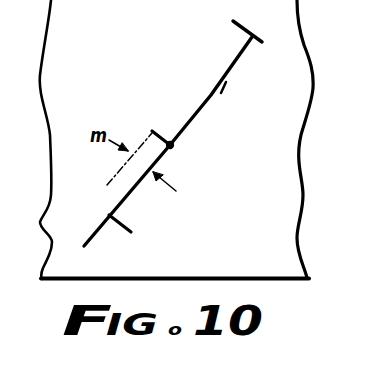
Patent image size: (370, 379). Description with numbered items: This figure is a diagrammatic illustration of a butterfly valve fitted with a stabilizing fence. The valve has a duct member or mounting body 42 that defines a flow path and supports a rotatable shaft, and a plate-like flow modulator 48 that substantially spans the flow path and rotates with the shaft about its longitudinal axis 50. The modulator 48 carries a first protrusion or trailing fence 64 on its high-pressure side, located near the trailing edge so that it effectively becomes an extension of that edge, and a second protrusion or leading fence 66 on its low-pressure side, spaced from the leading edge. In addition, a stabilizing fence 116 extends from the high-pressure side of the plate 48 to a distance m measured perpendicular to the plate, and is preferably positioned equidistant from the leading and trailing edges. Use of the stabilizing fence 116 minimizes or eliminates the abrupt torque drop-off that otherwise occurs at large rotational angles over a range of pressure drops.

The mounting body 42 is at (241, 277).
The flow modulator 48 is at (221, 93).
The longitudinal axis 50 is at (175, 145).
The trailing fence 64 is at (234, 21).
The leading fence 66 is at (132, 231).
The stabilizing fence 116 is at (156, 133).